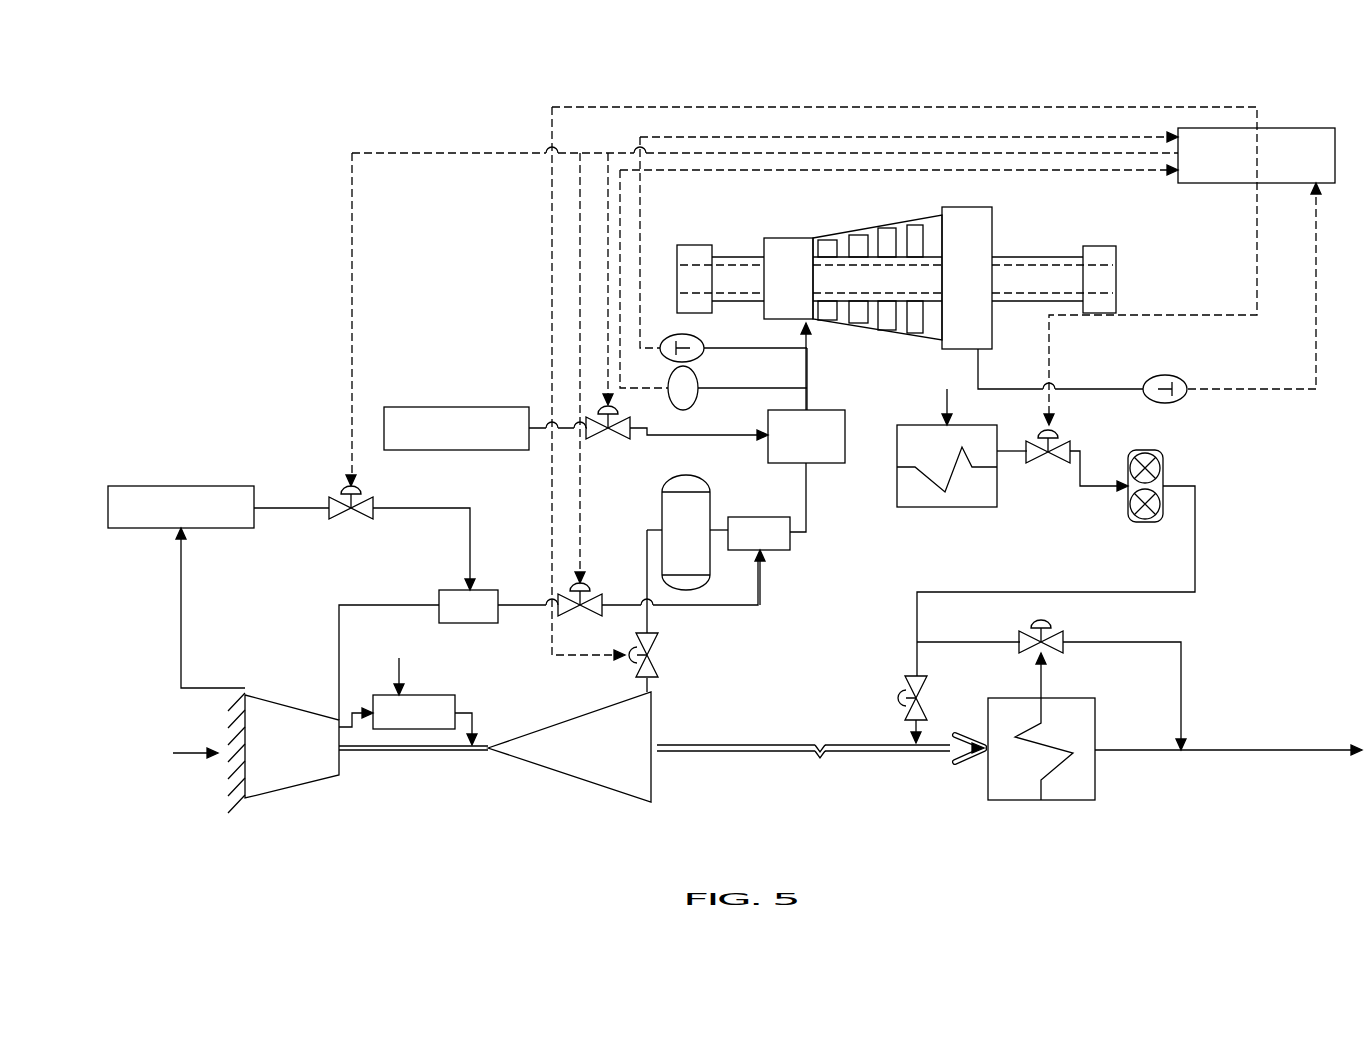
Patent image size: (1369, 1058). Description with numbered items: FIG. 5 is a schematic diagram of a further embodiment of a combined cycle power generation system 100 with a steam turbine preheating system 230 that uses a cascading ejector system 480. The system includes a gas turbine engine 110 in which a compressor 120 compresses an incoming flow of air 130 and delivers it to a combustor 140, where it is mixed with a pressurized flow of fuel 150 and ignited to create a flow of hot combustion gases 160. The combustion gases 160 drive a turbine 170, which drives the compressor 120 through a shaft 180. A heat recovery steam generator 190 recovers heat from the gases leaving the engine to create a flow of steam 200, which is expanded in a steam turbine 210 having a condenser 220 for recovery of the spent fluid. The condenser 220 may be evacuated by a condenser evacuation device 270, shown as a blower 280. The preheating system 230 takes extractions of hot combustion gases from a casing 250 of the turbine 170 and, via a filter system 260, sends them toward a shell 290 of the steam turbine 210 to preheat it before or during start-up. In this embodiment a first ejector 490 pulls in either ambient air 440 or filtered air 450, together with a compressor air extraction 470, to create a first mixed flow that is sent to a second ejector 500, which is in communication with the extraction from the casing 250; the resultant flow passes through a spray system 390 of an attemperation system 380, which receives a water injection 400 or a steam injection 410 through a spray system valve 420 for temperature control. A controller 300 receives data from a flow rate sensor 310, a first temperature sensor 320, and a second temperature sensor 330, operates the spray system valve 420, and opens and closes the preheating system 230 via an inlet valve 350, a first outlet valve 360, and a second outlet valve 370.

The combined cycle power generation system 100 is at (296, 161).
The gas turbine engine 110 is at (276, 690).
The compressor 120 is at (296, 787).
The flow of air 130 is at (189, 752).
The combustor 140 is at (415, 695).
The flow of fuel 150 is at (391, 670).
The flow of hot combustion gases 160 is at (476, 715).
The turbine 170 is at (626, 795).
The shaft 180 is at (424, 750).
The heat recovery steam generator 190 is at (1097, 712).
The flow of steam 200 is at (1046, 692).
The steam turbine 210 is at (896, 268).
The condenser 220 is at (957, 507).
The steam turbine preheating system 230 is at (640, 526).
The casing 250 is at (655, 716).
The filter system 260 is at (712, 494).
The condenser evacuation device 270 is at (1147, 479).
The blower 280 is at (1127, 503).
The shell 290 is at (782, 236).
The controller 300 is at (1291, 128).
The flow rate sensor 310 is at (698, 375).
The first temperature sensor 320 is at (698, 335).
The second temperature sensor 330 is at (1170, 376).
The inlet valve 350 is at (624, 665).
The first outlet valve 360 is at (889, 694).
The second outlet valve 370 is at (1044, 620).
The attemperation system 380 is at (824, 402).
The spray system 390 is at (822, 463).
The water injection 400 is at (448, 415).
The steam injection 410 is at (468, 405).
The spray system valve 420 is at (614, 414).
The ambient air 440 is at (214, 520).
The filtered air 450 is at (232, 530).
The compressor air extraction 470 is at (343, 640).
The cascading ejector system 480 is at (440, 581).
The first ejector 490 is at (470, 624).
The second ejector 500 is at (792, 538).